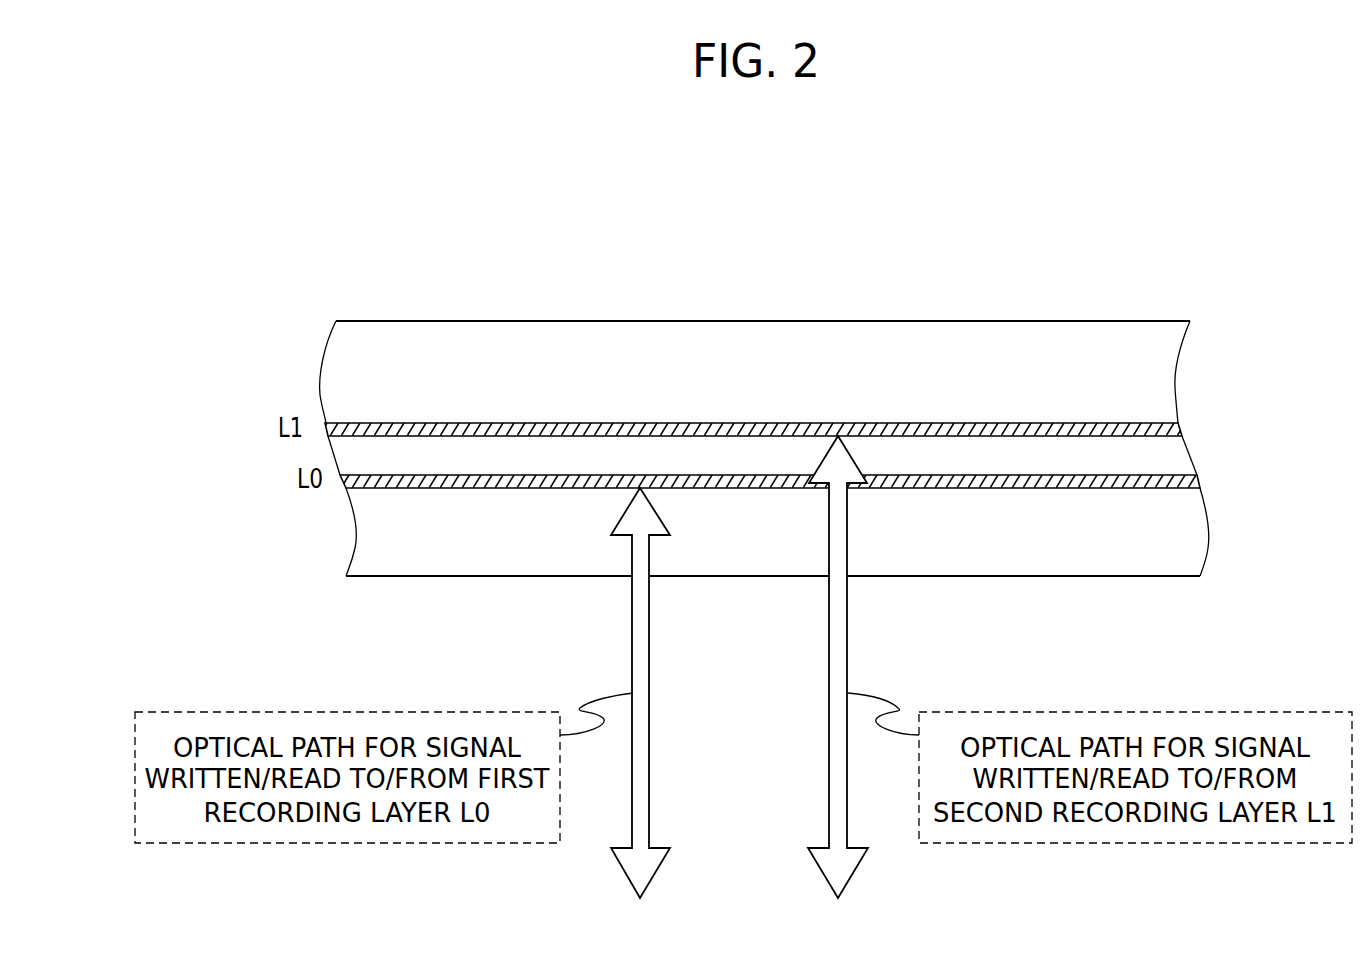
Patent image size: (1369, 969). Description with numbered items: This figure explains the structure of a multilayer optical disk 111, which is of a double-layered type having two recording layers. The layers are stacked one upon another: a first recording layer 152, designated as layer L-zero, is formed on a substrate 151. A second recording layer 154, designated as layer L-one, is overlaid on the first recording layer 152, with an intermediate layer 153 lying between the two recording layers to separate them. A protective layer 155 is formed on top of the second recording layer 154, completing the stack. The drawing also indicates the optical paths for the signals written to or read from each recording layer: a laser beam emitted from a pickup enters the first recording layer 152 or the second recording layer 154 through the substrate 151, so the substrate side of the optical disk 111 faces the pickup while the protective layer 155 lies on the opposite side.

The optical disk 111 is at (774, 266).
The substrate 151 is at (1202, 537).
The first recording layer 152 is at (1200, 480).
The intermediate layer 153 is at (1182, 452).
The second recording layer 154 is at (1178, 422).
The protective layer 155 is at (1171, 375).